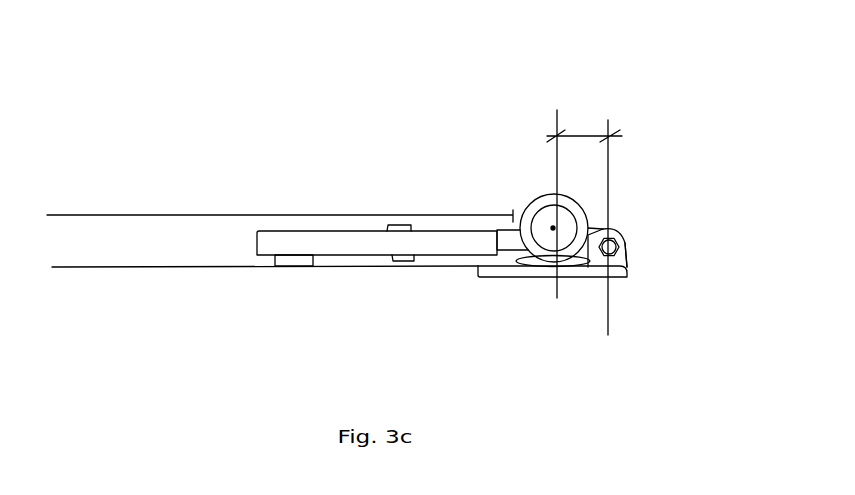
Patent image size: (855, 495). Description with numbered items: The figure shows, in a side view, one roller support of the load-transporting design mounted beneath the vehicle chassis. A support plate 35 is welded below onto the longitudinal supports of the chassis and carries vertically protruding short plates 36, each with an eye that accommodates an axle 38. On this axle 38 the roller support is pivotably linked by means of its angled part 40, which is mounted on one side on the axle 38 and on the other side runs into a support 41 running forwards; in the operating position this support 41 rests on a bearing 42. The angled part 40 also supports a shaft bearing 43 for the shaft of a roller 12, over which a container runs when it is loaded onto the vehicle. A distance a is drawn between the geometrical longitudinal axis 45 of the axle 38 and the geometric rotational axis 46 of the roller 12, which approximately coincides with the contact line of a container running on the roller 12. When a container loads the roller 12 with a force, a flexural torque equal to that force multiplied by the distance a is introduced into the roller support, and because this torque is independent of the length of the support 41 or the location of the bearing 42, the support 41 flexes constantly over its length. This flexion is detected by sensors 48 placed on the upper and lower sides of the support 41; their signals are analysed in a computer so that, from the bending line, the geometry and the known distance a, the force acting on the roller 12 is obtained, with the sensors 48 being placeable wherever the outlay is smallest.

The roller 12 is at (535, 200).
The support plate 35 is at (568, 274).
The short plate 36 is at (617, 261).
The axle 38 is at (613, 229).
The angled part 40 is at (500, 231).
The support running forwards 41 is at (303, 248).
The bearing 42 is at (298, 260).
The shaft bearing 43 is at (553, 228).
The geometrical longitudinal axis 45 is at (623, 243).
The geometric rotational axis 46 is at (547, 230).
The sensor 48 is at (397, 230).
The distance a is at (590, 135).